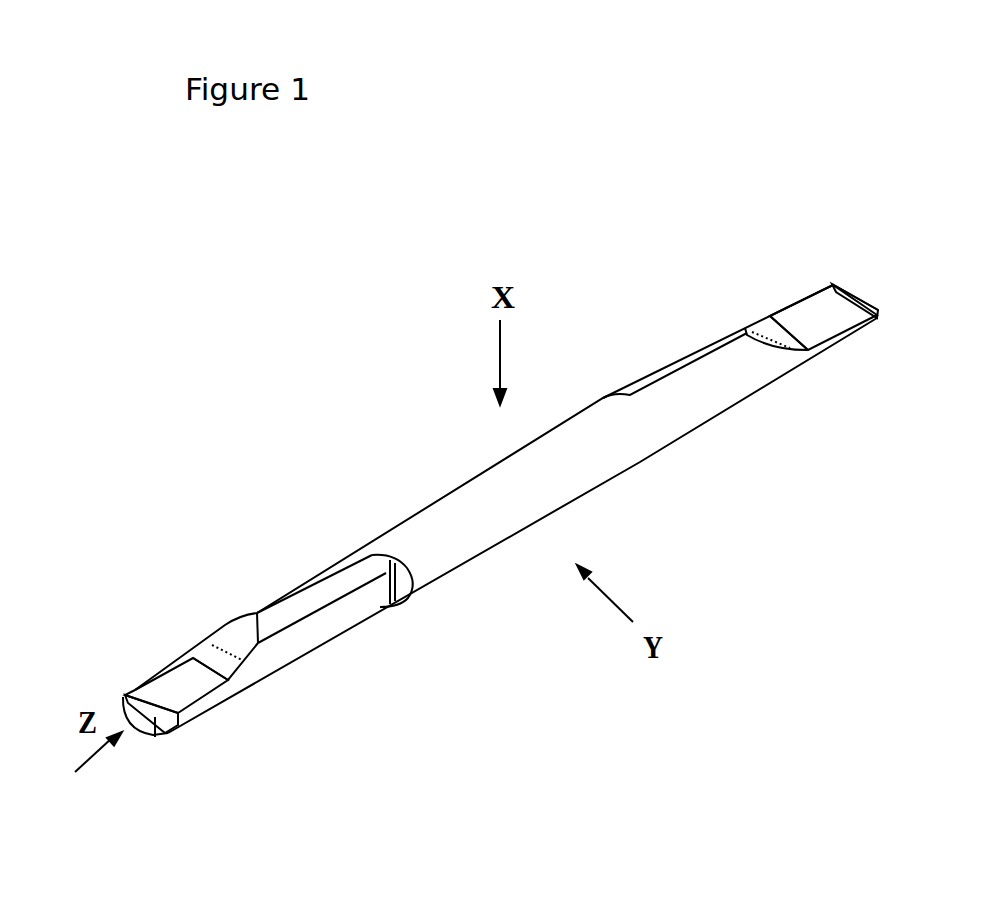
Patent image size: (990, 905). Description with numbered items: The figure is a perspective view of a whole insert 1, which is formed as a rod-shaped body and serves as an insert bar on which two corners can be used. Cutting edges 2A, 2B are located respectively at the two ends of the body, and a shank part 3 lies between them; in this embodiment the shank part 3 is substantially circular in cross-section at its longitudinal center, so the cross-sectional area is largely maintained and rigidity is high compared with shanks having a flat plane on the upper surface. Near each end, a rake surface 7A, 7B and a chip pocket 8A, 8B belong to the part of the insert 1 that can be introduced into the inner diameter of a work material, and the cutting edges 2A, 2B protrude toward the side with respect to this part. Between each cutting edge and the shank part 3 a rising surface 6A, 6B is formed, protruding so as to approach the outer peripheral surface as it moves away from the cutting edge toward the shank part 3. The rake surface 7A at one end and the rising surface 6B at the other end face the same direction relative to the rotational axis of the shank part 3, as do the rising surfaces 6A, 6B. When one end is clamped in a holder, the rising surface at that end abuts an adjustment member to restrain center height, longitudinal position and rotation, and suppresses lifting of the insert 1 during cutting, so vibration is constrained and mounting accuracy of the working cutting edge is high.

The insert 1 is at (848, 210).
The cutting edge 2A is at (155, 737).
The cutting edge 2B is at (865, 294).
The shank part 3 is at (430, 517).
The rising surface 6A is at (228, 642).
The rising surface 6B is at (773, 337).
The rake surface 7A is at (135, 693).
The rake surface 7B is at (840, 282).
The chip pocket 8A is at (178, 695).
The chip pocket 8B is at (833, 317).